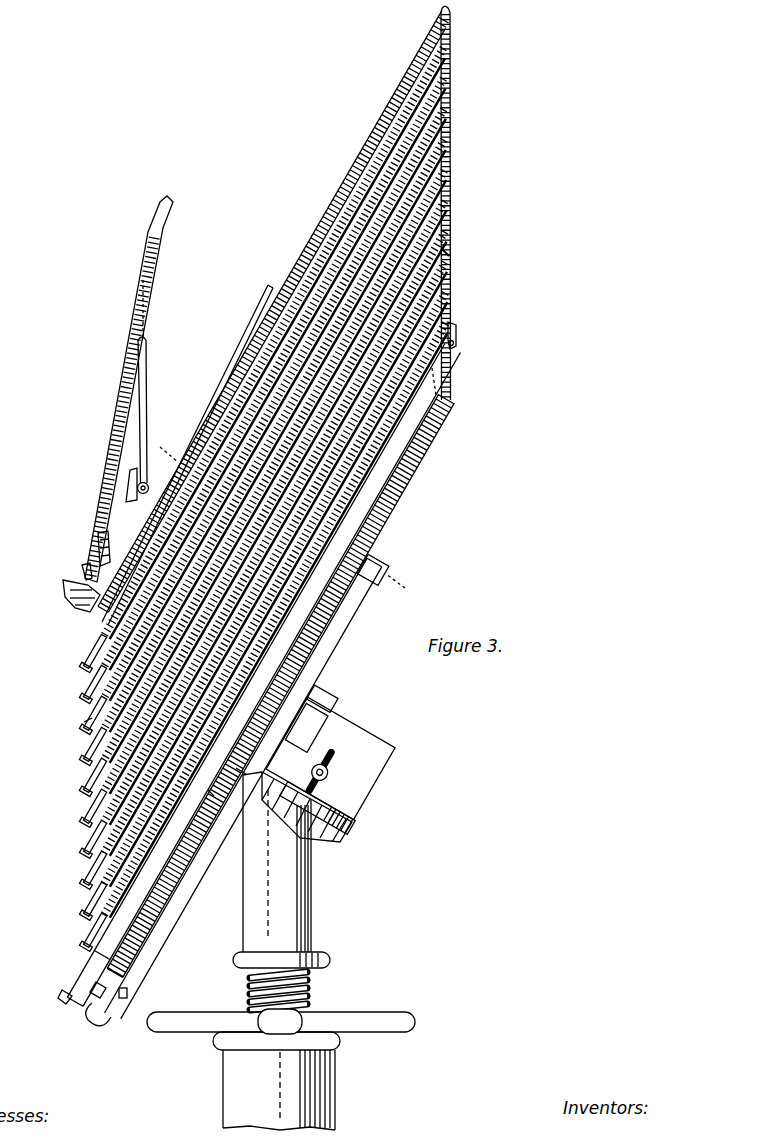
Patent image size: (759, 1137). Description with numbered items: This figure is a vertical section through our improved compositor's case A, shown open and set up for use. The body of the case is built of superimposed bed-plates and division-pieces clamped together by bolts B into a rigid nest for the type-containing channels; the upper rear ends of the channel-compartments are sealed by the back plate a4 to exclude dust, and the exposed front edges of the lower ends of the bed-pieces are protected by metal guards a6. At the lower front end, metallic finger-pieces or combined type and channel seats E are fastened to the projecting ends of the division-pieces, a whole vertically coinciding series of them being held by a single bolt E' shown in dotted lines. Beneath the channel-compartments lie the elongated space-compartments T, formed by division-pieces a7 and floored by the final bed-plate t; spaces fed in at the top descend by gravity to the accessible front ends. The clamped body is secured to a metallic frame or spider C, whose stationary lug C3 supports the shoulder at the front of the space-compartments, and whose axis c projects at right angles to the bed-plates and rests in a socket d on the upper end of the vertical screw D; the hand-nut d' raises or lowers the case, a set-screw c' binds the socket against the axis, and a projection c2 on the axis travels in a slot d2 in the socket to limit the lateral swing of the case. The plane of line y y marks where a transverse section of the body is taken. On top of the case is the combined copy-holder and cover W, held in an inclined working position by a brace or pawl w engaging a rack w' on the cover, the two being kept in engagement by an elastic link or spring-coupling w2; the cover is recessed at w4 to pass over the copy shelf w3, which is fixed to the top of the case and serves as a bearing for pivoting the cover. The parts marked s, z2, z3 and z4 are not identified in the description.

The compositor's case A is at (310, 491).
The back plate a4 is at (450, 256).
The metal guard strips a6 is at (84, 672).
The division-pieces of space-compartments a7 is at (229, 758).
The slat end s is at (79, 725).
The space-compartment T is at (263, 674).
The final bed-plate t is at (316, 584).
The spider C is at (243, 789).
The stationary lug C3 is at (91, 1016).
The axis c is at (343, 808).
The set-screw c' is at (328, 767).
The shoulder projection c2 is at (320, 700).
The socket d is at (330, 758).
The hand-nut d' is at (281, 1012).
The slot d2 is at (306, 727).
The vertical screw D is at (282, 951).
The clamping bolts B is at (398, 566).
The section line y is at (281, 521).
The finger-piece seat E is at (104, 548).
The seat bolt E' is at (121, 1010).
The copy-holder cover W is at (129, 382).
The pawl w is at (148, 432).
The rack w' is at (152, 345).
The spring-coupling w2 is at (131, 493).
The copy shelf w3 is at (72, 590).
The cover recess w4 is at (82, 566).
The stop z2 is at (452, 352).
The tooth z3 is at (90, 988).
The tooth z4 is at (58, 995).